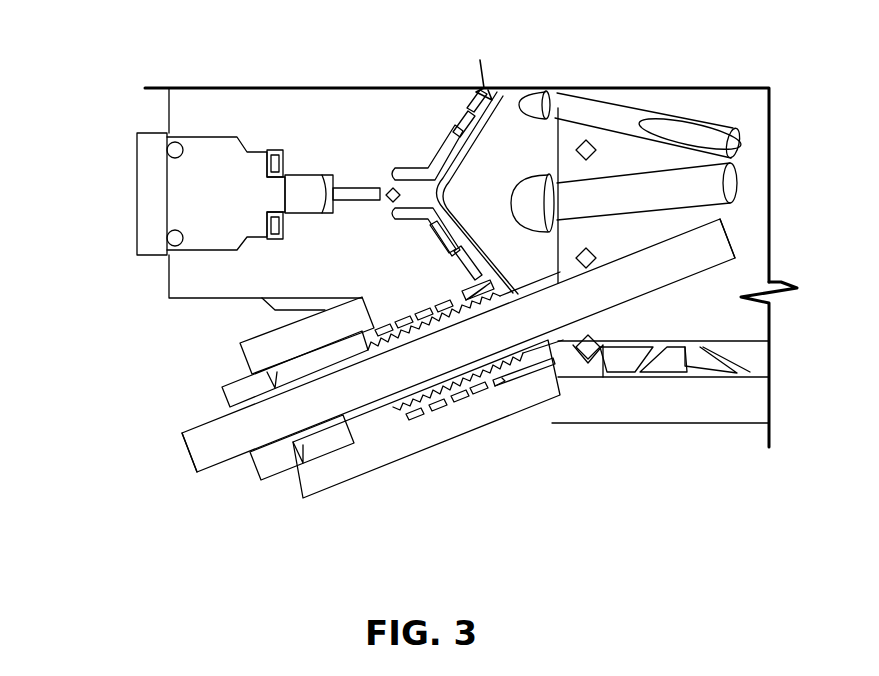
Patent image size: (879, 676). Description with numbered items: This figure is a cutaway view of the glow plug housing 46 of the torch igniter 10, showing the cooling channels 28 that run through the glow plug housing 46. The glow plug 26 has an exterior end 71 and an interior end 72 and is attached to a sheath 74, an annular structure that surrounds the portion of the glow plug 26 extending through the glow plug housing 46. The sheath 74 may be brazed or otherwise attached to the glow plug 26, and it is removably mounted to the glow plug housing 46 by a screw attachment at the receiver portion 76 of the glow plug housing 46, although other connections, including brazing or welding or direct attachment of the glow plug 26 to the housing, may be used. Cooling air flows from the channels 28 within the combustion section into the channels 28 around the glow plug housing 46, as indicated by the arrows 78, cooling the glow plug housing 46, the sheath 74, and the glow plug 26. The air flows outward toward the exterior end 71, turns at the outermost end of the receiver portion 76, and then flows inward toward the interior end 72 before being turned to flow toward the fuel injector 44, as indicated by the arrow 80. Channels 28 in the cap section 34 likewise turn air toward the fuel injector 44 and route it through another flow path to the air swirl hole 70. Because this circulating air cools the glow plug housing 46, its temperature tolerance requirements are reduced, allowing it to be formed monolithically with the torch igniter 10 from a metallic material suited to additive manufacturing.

The torch igniter 10 is at (100, 120).
The fuel injector 44 is at (330, 176).
The cap section 34 is at (400, 120).
The arrow 80 is at (460, 296).
The air swirl hole 70 is at (600, 143).
The glow plug 26 is at (458, 345).
The interior end 72 is at (736, 242).
The exterior end 71 is at (205, 443).
The sheath 74 is at (270, 480).
The receiver portion 76 is at (408, 428).
The glow plug housing 46 is at (343, 488).
The cooling channel 28 is at (472, 405).
The arrows 78 is at (590, 366).